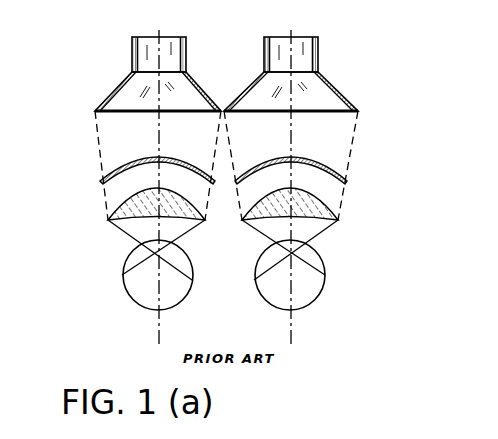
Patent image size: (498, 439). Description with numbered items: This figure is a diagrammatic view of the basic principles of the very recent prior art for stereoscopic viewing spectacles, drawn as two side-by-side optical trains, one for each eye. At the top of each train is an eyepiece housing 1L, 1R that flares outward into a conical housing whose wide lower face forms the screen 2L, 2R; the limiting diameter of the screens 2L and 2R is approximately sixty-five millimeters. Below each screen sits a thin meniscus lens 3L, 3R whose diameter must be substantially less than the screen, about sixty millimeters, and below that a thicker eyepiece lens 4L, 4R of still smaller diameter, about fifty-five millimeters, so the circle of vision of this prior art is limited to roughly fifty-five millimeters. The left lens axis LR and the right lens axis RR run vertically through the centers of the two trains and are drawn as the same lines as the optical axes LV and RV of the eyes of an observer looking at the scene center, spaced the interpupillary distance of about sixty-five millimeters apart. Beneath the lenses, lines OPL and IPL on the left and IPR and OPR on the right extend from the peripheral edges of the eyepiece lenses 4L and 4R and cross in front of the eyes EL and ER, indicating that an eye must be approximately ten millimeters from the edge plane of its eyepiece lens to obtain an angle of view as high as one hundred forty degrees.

The left eyepiece housing 1L is at (132, 63).
The right eyepiece housing 1R is at (318, 71).
The left screen 2L is at (141, 112).
The right screen 2R is at (309, 112).
The left lens 3L is at (104, 175).
The right lens 3R is at (355, 177).
The left eyepiece lens 4L is at (112, 212).
The right eyepiece lens 4R is at (338, 216).
The left lens axis LR is at (160, 36).
The left eye optical axis LV is at (162, 36).
The right lens axis RR is at (294, 36).
The right eye optical axis RV is at (295, 37).
The left outer pupil ray line OPL is at (123, 232).
The left inner pupil ray line IPL is at (204, 232).
The right inner pupil ray line IPR is at (247, 232).
The right outer pupil ray line OPR is at (323, 233).
The left eye EL is at (125, 283).
The right eye ER is at (322, 286).